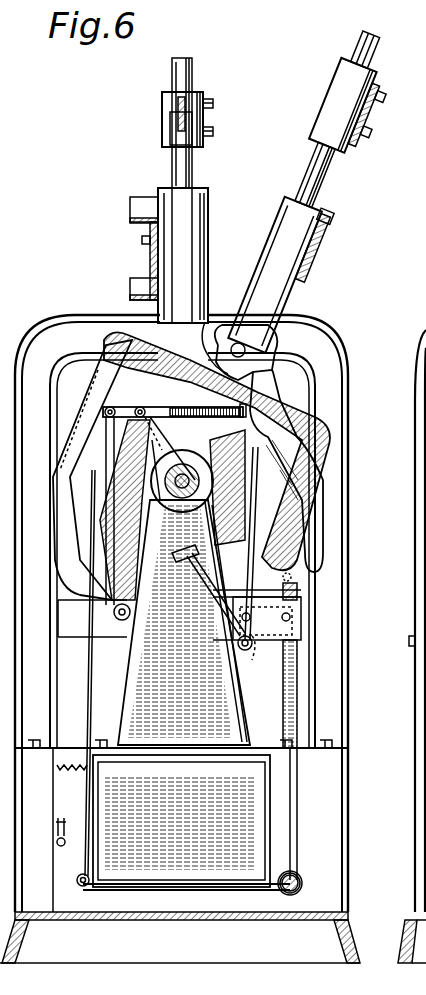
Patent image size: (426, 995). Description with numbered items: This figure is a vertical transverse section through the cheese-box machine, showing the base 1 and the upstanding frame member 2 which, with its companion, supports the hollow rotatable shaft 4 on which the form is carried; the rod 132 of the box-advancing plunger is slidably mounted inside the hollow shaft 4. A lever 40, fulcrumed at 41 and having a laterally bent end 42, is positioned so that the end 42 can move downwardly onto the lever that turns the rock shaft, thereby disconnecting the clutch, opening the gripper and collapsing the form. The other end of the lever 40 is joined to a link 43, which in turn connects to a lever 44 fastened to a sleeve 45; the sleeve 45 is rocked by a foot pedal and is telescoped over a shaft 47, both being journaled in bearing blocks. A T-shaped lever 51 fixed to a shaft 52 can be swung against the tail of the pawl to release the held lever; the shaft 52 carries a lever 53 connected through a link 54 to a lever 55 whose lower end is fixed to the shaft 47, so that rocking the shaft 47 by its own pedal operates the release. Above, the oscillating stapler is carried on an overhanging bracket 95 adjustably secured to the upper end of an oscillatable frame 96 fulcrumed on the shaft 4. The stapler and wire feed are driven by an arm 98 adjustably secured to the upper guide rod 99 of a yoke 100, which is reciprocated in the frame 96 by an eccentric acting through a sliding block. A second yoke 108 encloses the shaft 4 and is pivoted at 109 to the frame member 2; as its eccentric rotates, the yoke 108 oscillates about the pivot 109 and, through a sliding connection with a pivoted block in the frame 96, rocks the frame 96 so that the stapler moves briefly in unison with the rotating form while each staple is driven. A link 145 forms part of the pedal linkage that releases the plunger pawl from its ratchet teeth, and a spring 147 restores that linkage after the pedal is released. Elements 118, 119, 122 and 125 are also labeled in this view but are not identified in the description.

The base 1 is at (345, 936).
The upstanding frame member 2 is at (222, 694).
The hollow rotatable shaft 4 is at (183, 470).
The lever 40 is at (184, 407).
The fulcrum 41 is at (131, 490).
The laterally bent end 42 is at (243, 406).
The link 43 is at (88, 692).
The lever 44 is at (190, 886).
The sleeve 45 is at (296, 873).
The shaft 47 is at (305, 883).
The T-shaped lever 51 is at (215, 605).
The shaft 52 is at (238, 647).
The lever 53 is at (254, 650).
The link 54 is at (297, 600).
The lever 55 is at (296, 706).
The overhanging bracket 95 is at (332, 244).
The oscillatable frame 96 is at (266, 228).
The arm 98 is at (378, 122).
The upper guide rod 99 is at (331, 174).
The yoke 100 is at (312, 430).
The yoke 108 is at (255, 372).
The pivot 109 is at (130, 622).
The bracket 118 is at (145, 212).
The frame 119 is at (100, 318).
The clamp 122 is at (180, 106).
The rod 125 is at (176, 168).
The rod 132 is at (200, 483).
The link 145 is at (66, 844).
The spring 147 is at (64, 823).